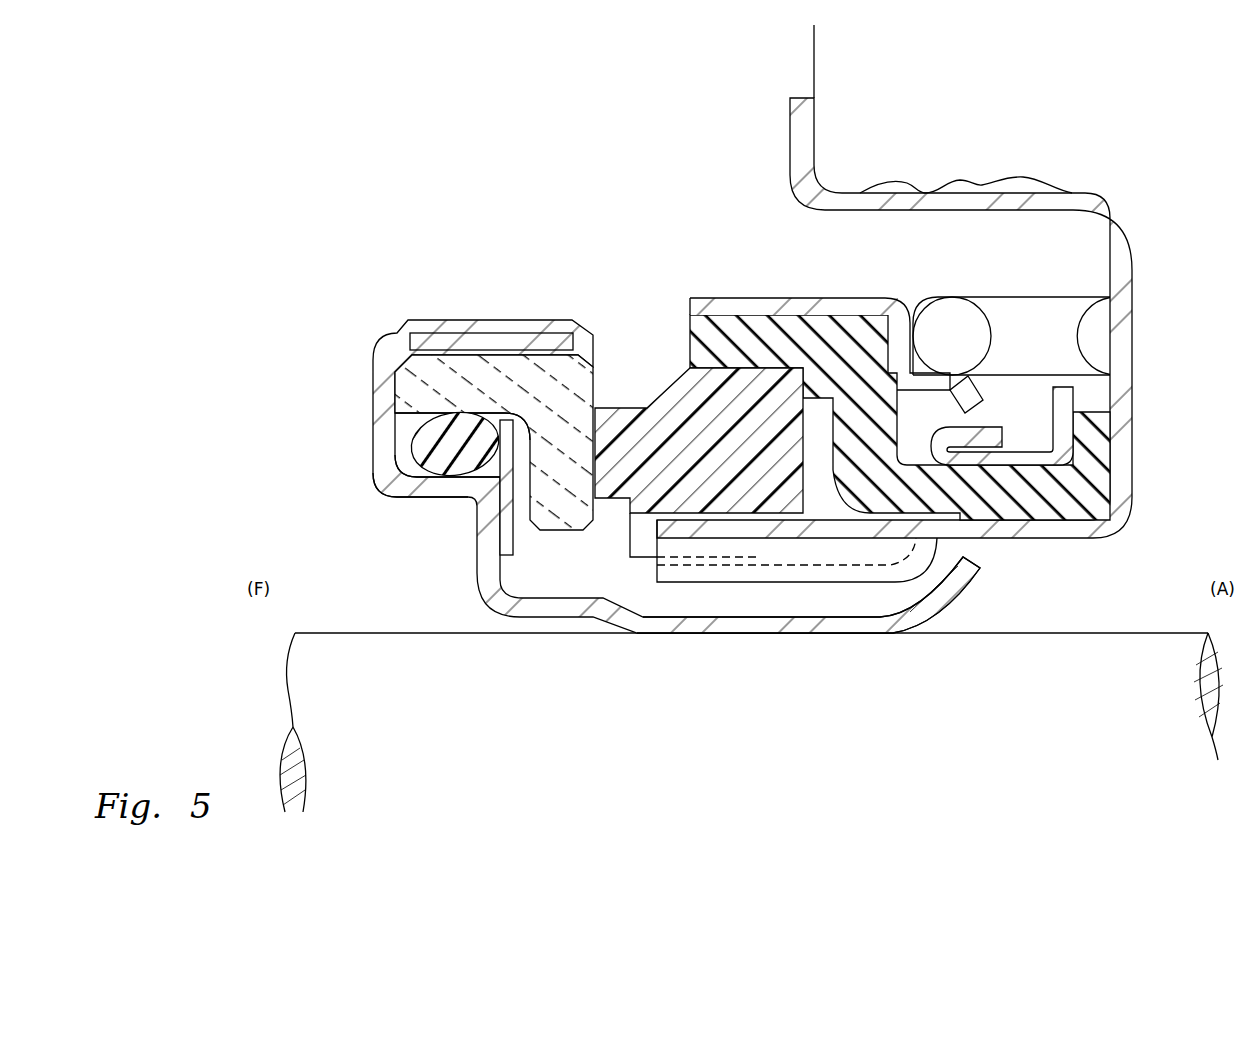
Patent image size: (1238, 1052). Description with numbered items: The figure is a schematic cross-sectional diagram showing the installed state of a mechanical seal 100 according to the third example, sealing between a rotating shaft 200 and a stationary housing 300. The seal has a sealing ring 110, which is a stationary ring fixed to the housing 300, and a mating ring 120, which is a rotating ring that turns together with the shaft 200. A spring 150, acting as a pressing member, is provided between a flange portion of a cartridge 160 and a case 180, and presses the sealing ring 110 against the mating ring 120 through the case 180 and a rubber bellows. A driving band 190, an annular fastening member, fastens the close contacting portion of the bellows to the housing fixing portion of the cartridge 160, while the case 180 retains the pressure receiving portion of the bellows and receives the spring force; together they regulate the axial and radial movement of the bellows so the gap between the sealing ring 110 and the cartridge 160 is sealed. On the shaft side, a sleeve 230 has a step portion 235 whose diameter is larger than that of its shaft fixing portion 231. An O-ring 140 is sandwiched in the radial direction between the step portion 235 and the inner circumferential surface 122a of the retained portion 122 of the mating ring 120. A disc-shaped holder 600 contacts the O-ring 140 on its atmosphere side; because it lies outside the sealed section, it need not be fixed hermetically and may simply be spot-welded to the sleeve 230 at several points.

The mechanical seal 100 is at (704, 359).
The sealing ring 110 is at (632, 407).
The mating ring 120 is at (503, 319).
The retained portion 122 is at (445, 390).
The inner circumferential surface 122a is at (420, 417).
The O-ring 140 is at (462, 468).
The spring 150 is at (1017, 297).
The cartridge 160 is at (876, 191).
The case 180 is at (752, 295).
The driving band 190 is at (1040, 447).
The shaft 200 is at (751, 722).
The sleeve 230 is at (372, 407).
The shaft fixing portion 231 is at (650, 625).
The step portion 235 is at (430, 490).
The housing 300 is at (943, 109).
The holder 600 is at (516, 540).